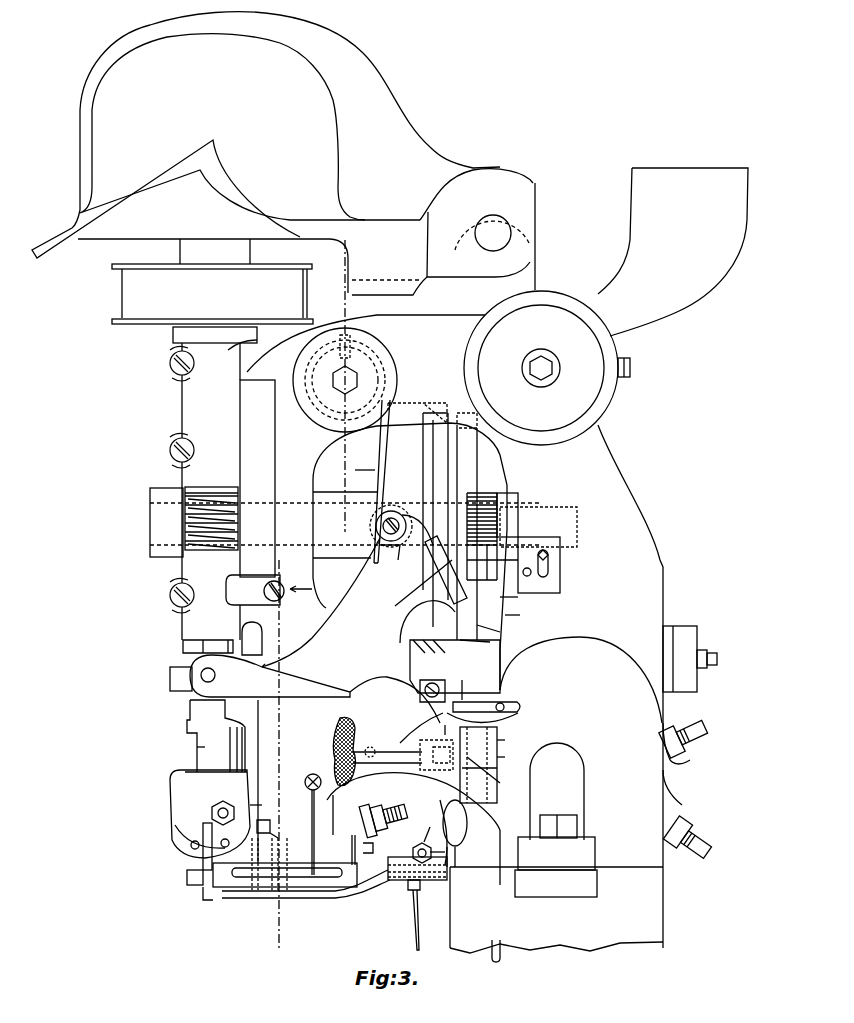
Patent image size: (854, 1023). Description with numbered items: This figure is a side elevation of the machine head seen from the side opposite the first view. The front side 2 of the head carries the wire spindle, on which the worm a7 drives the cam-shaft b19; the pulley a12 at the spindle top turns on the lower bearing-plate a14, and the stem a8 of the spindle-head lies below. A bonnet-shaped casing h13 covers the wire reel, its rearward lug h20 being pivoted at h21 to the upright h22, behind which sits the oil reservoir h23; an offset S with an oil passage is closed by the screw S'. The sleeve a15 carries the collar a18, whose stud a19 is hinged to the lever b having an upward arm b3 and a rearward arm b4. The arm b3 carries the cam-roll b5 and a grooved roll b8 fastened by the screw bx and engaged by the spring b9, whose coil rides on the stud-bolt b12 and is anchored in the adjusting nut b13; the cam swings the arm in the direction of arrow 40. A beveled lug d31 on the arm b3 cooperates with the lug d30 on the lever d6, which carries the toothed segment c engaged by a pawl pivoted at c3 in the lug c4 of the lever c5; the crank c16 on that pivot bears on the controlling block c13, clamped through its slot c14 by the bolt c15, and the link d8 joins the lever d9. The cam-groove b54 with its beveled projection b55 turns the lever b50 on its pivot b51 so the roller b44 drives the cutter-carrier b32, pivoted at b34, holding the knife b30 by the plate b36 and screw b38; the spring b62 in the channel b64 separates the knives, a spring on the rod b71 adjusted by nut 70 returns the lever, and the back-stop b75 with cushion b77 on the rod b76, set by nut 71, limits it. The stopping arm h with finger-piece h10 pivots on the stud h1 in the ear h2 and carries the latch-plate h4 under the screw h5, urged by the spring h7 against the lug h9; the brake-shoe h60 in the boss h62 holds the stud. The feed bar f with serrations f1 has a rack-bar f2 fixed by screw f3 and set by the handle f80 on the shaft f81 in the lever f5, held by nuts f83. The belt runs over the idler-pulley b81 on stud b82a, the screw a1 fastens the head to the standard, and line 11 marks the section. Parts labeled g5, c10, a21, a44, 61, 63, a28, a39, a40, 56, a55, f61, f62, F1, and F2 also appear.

The casing for the wire-carrying reel h13 is at (266, 152).
The block g5 is at (215, 251).
The section line 11 is at (305, 608).
The pulley a12 is at (122, 286).
The lower bearing-plate a14 is at (173, 326).
The pivot h21 is at (507, 231).
The lug or upright h22 is at (526, 262).
The rearwardly-extended lug or arm h20 is at (486, 279).
The oil reservoir h23 is at (673, 252).
The adjusting collar or nut b13 is at (390, 362).
The stud-bolt b12 is at (348, 392).
The beveled projection b55 is at (442, 391).
The shaft or stud b82a is at (542, 380).
The idler-pulley b81 is at (593, 394).
The front side of the head 2 is at (182, 403).
The worm a7 is at (216, 487).
The offset S is at (262, 492).
The screw S' is at (285, 585).
The arrow 40 is at (301, 599).
The cam-shaft b19 is at (152, 505).
The cam-groove b54 is at (386, 464).
The spring b9 is at (378, 465).
The cam-roll b5 is at (395, 512).
The screw bx is at (375, 525).
The grooved wheel or roll b8 is at (390, 558).
The upwardly-extended arm b3 is at (356, 578).
The beveled lug or projection d31 is at (428, 565).
The lug or projection d30 is at (405, 603).
The curved arm or segment c is at (478, 548).
The pivot c3 is at (488, 552).
The pin c10 is at (498, 556).
The controlling block c13 is at (562, 581).
The slot c14 is at (556, 565).
The clamping-bolt c15 is at (549, 557).
The crank or arm c16 is at (531, 569).
The lever c5 is at (520, 602).
The lug or projection c4 is at (520, 612).
The link or rod d8 is at (500, 630).
The lever or arm d6 is at (490, 642).
The lug a21 is at (183, 645).
The collar a18 is at (170, 675).
The stud a19 is at (216, 675).
The lever or arm b is at (280, 662).
The stud, bolt, or pin b51 is at (353, 687).
The block or lug h9 is at (420, 685).
The sleeve a15 is at (190, 710).
The slot a44 is at (247, 745).
The stem a8 is at (197, 750).
The handle or finger-piece h10 is at (335, 750).
The arm or lever h is at (415, 767).
The rearwardly-extended arm b4 is at (425, 680).
The screw h5 is at (488, 700).
The latch-plate h4 is at (466, 700).
The spring h7 is at (483, 712).
The pivot stud or pin h1 is at (497, 740).
The boss or ear h2 is at (497, 757).
The brake-shoe h60 is at (497, 775).
The pin 61 is at (444, 726).
The pin 63 is at (479, 773).
The block a28 is at (220, 804).
The holes a39 is at (191, 845).
The knife or cutter b30 is at (207, 824).
The slot a40 is at (228, 842).
The slot 56 is at (276, 853).
The lever b50 is at (272, 826).
The spring b62 is at (315, 836).
The bolt or screw b38 is at (187, 876).
The clamping piece or plate b36 is at (205, 885).
The teeth or serrations f1 is at (225, 888).
The foot a55 is at (207, 900).
The cutter-carrier b32 is at (253, 888).
The pivot b34 is at (279, 888).
The groove, slot, or channel b64 is at (308, 878).
The roller b44 is at (378, 897).
The feed bar f is at (337, 907).
The screw f3 is at (412, 890).
The crank or handle f80 is at (413, 918).
The back-stop b75 is at (376, 801).
The rod b76 is at (398, 811).
The buffer or cushion b77 is at (413, 819).
The hollow lug or boss h62 is at (445, 815).
The pinion shaft f81 is at (425, 837).
The rack-bar f2 is at (390, 858).
The lever f5 is at (430, 813).
The adjusting-nuts f83 is at (445, 851).
The bolts or screws a1 is at (578, 820).
The lever d9 is at (500, 944).
The box f61 is at (697, 640).
The stud f62 is at (712, 655).
The nut 71 is at (690, 752).
The frame bracket F2 is at (663, 788).
The nut 70 is at (685, 822).
The rod or bolt b71 is at (696, 835).
The frame F1 is at (663, 889).